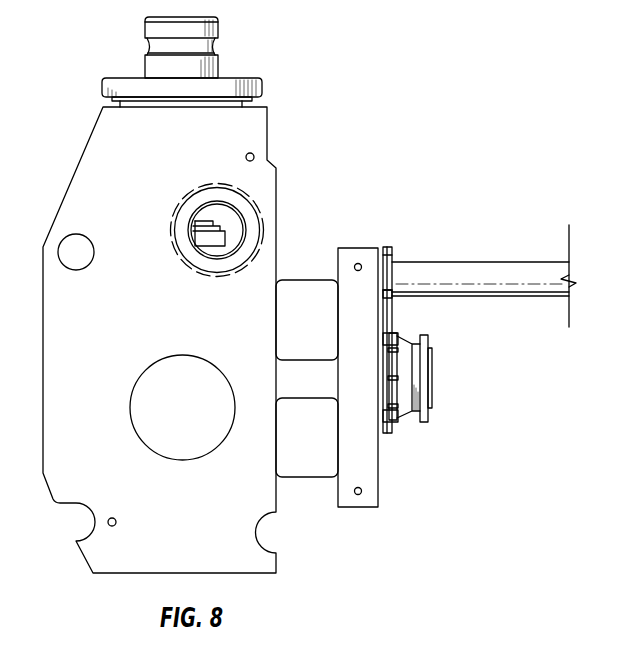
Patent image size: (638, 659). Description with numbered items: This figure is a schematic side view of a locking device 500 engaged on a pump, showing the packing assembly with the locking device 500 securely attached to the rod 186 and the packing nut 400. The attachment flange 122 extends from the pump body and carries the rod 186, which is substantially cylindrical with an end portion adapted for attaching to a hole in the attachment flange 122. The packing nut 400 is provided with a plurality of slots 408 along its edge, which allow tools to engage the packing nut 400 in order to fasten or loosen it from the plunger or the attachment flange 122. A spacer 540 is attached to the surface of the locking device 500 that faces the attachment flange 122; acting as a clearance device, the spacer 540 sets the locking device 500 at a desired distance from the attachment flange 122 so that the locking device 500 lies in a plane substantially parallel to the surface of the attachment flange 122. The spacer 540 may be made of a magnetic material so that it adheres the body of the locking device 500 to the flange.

The attachment flange 122 is at (357, 507).
The rod 186 is at (500, 262).
The packing nut 400 is at (390, 426).
The slots 408 is at (393, 350).
The locking device 500 is at (390, 247).
The spacer 540 is at (386, 297).